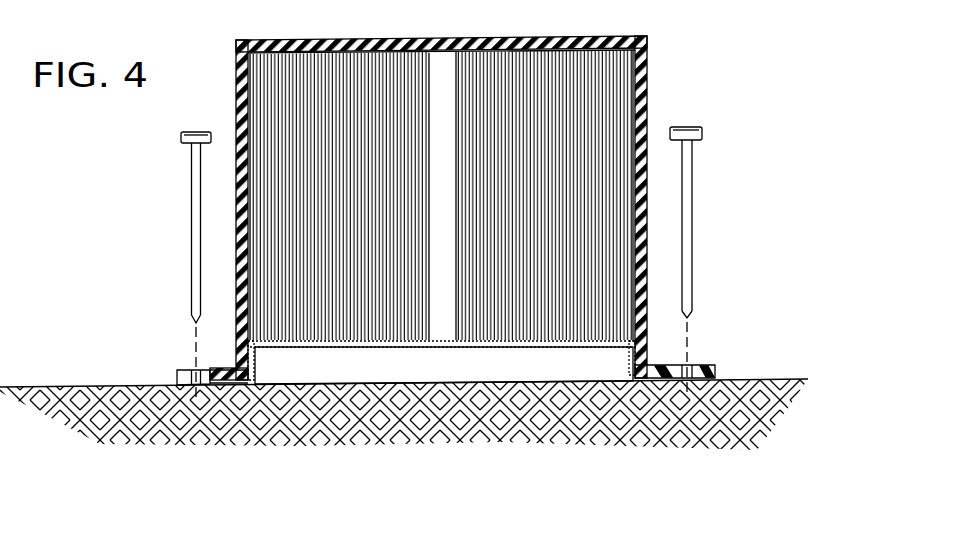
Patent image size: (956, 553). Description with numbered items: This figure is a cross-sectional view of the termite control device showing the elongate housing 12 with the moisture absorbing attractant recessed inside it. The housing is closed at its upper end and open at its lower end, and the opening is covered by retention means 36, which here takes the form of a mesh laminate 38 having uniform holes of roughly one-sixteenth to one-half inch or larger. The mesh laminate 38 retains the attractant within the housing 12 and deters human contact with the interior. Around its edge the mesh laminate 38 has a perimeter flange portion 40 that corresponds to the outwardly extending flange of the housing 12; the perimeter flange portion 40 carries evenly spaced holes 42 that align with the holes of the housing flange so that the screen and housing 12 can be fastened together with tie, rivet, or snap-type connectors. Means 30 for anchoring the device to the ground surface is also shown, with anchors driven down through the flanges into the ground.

The elongate housing 12 is at (236, 119).
The means for anchoring 30 is at (748, 286).
The retention means 36 is at (327, 398).
The mesh laminate 38 is at (493, 343).
The perimeter flange portion 40 is at (716, 371).
The aligned holes 42 is at (193, 387).